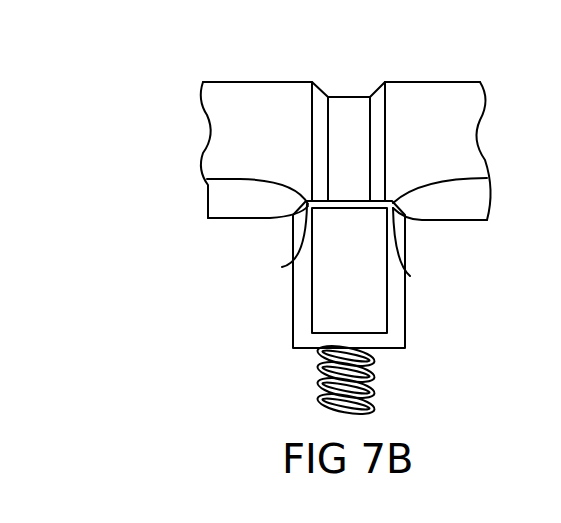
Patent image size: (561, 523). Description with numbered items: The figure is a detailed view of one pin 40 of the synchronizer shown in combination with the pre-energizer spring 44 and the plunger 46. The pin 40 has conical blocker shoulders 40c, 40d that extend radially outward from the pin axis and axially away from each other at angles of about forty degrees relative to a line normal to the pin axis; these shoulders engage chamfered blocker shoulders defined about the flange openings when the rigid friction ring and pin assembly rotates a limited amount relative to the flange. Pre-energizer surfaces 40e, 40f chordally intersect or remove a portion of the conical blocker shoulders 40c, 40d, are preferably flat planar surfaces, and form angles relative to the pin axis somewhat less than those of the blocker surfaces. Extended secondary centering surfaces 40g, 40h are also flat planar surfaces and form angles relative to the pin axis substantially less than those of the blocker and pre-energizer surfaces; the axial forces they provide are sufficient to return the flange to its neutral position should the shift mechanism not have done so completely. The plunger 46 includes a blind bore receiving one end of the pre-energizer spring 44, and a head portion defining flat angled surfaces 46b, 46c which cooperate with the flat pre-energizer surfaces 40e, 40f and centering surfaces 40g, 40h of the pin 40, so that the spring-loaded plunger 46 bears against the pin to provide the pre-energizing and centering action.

The pin 40 is at (228, 58).
The conical blocker shoulder 40c is at (323, 93).
The conical blocker shoulder 40d is at (377, 93).
The flat angled surface 46b is at (207, 179).
The flat angled surface 46c is at (486, 179).
The secondary centering surface 40g is at (288, 218).
The secondary centering surface 40h is at (422, 221).
The pre-energizer surface 40e is at (282, 267).
The pre-energizer surface 40f is at (410, 276).
The plunger 46 is at (278, 306).
The pre-energizer spring 44 is at (362, 393).